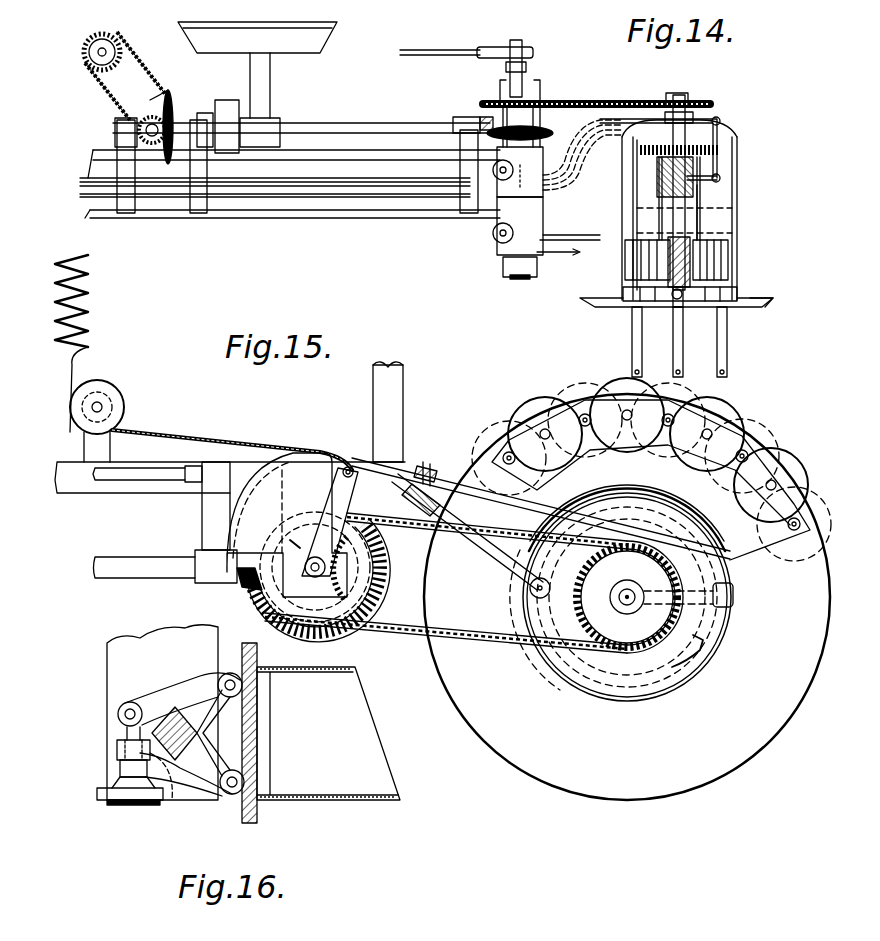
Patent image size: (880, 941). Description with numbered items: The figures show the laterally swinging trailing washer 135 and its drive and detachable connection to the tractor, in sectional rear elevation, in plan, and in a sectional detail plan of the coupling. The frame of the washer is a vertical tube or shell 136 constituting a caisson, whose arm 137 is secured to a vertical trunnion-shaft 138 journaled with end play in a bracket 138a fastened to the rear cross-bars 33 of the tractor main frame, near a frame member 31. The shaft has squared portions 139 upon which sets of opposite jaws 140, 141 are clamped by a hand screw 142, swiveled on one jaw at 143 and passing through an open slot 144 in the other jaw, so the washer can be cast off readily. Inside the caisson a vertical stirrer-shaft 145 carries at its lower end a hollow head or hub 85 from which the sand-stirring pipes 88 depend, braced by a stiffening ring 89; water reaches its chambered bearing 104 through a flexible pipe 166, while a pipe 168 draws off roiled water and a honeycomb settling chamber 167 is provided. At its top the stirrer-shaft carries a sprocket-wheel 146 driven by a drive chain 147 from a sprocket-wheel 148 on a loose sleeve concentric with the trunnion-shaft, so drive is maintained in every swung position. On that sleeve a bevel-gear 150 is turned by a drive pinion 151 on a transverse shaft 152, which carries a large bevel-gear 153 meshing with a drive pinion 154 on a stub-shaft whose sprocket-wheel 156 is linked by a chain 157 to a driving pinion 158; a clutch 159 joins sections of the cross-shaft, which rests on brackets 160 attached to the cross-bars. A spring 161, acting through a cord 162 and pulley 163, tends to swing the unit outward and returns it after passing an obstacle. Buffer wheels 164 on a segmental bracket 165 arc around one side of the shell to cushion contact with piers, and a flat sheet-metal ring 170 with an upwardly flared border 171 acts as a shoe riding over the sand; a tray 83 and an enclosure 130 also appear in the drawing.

In FIG. 15, the frame post 31 is at (403, 385).
In FIG. 14, the rear cross-bars 33 is at (375, 210).
In FIG. 15, the rear cross-bars 33 is at (105, 492).
In FIG. 14, the tray 83 is at (340, 24).
In FIG. 14, the hollow head or hub 85 is at (683, 307).
In FIG. 14, the sand-stirring and washing pipes 88 is at (642, 340).
In FIG. 14, the stiffening ring 89 is at (728, 286).
In FIG. 14, the chambered bearing 104 is at (700, 192).
In FIG. 14, the casing 130 is at (728, 226).
In FIG. 15, the casing 130 is at (703, 650).
In FIG. 14, the trailing washer 135 is at (597, 312).
In FIG. 14, the vertical tube or shell 136 is at (728, 168).
In FIG. 15, the vertical tube or shell 136 is at (612, 705).
In FIG. 14, the arm 137 is at (560, 252).
In FIG. 15, the arm 137 is at (398, 635).
In FIG. 16, the arm 137 is at (355, 798).
In FIG. 14, the trunnion-shaft 138 is at (505, 48).
In FIG. 15, the trunnion-shaft 138 is at (310, 557).
In FIG. 14, the bracket 138a is at (503, 265).
In FIG. 16, the squared portions 139 is at (198, 735).
In FIG. 14, the jaw 140 is at (545, 200).
In FIG. 16, the jaw 140 is at (196, 796).
In FIG. 16, the jaw 141 is at (190, 684).
In FIG. 14, the hand screw 142 is at (492, 205).
In FIG. 16, the hand screw 142 is at (110, 806).
In FIG. 16, the swivel 143 is at (118, 708).
In FIG. 16, the open slot 144 is at (170, 806).
In FIG. 14, the stirrer-shaft 145 is at (637, 215).
In FIG. 15, the stirrer-shaft 145 is at (627, 590).
In FIG. 14, the sprocket-wheel 146 is at (682, 96).
In FIG. 15, the sprocket-wheel 146 is at (627, 615).
In FIG. 14, the drive chain 147 is at (600, 100).
In FIG. 15, the drive chain 147 is at (472, 650).
In FIG. 14, the sprocket-wheel 148 is at (488, 100).
In FIG. 15, the sprocket-wheel 148 is at (387, 566).
In FIG. 14, the bevel-gear 150 is at (536, 133).
In FIG. 15, the bevel-gear 150 is at (355, 520).
In FIG. 14, the drive pinion 151 is at (478, 120).
In FIG. 15, the drive pinion 151 is at (240, 590).
In FIG. 14, the transverse shaft 152 is at (360, 122).
In FIG. 15, the transverse shaft 152 is at (138, 557).
In FIG. 14, the large bevel-gear 153 is at (175, 108).
In FIG. 14, the drive pinion 154 is at (137, 120).
In FIG. 14, the sprocket-wheel 156 is at (158, 100).
In FIG. 14, the chain 157 is at (140, 52).
In FIG. 14, the driving pinion 158 is at (90, 88).
In FIG. 14, the clutch 159 is at (231, 150).
In FIG. 14, the brackets 160 is at (192, 215).
In FIG. 15, the spring 161 is at (92, 310).
In FIG. 14, the cord 162 is at (437, 48).
In FIG. 15, the cord 162 is at (205, 440).
In FIG. 15, the pulley 163 is at (122, 393).
In FIG. 15, the buffer wheels 164 is at (770, 432).
In FIG. 15, the segmental bracket 165 is at (755, 560).
In FIG. 14, the pipe 166 is at (725, 122).
In FIG. 15, the pipe 166 is at (540, 500).
In FIG. 14, the honeycomb settling chamber 167 is at (735, 258).
In FIG. 14, the pipe 168 is at (572, 158).
In FIG. 15, the pipe 168 is at (485, 575).
In FIG. 14, the sheet-metal ring 170 is at (590, 296).
In FIG. 14, the flared border 171 is at (765, 307).